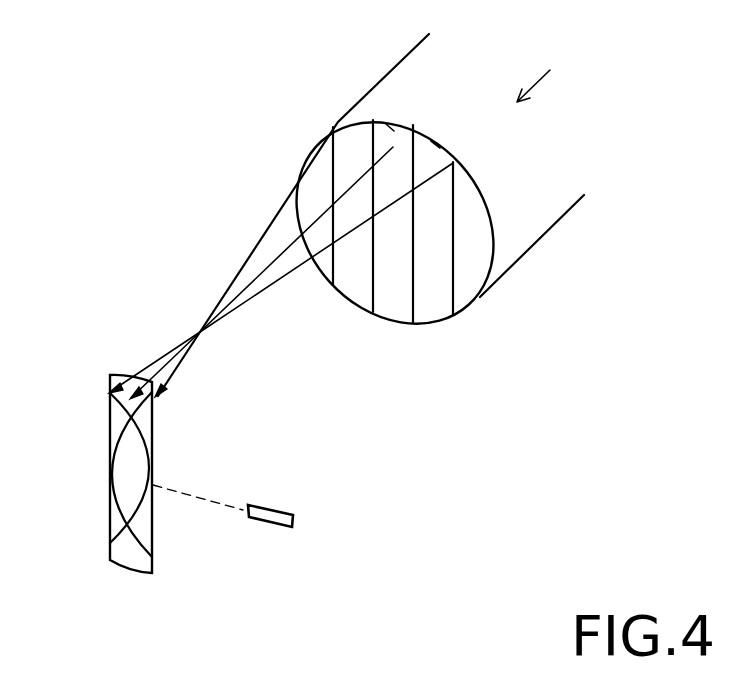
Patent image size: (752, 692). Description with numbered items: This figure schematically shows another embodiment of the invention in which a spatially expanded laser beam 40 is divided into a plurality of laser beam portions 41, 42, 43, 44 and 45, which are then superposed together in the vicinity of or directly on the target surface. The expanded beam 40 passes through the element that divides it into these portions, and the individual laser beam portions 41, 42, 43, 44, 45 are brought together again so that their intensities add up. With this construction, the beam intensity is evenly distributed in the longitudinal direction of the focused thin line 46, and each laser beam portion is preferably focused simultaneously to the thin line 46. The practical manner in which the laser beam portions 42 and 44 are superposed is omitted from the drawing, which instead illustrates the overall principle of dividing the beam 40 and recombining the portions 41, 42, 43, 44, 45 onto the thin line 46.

The spatially expanded laser beam 40 is at (530, 237).
The laser beam portion 41 is at (312, 148).
The laser beam portion 42 is at (357, 130).
The laser beam portion 43 is at (390, 127).
The laser beam portion 44 is at (435, 145).
The lens zone 45 is at (477, 213).
The focused thin line 46 is at (292, 513).